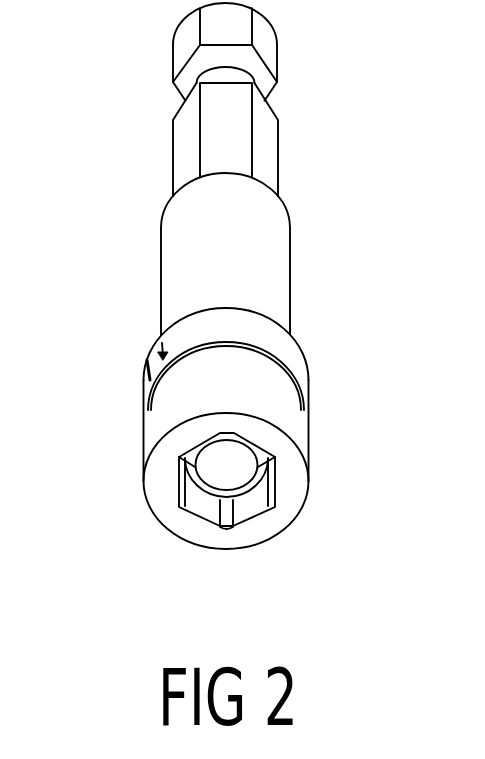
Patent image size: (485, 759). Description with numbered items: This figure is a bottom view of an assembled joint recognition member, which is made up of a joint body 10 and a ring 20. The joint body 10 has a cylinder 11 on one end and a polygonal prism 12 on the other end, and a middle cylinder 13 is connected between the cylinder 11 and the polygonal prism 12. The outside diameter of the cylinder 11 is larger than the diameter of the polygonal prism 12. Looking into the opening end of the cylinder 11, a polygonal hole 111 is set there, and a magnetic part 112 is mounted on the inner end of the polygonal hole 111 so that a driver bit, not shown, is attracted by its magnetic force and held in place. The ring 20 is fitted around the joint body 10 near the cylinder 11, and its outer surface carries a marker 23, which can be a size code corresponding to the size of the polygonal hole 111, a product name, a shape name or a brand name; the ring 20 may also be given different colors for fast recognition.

The joint body 10 is at (318, 215).
The cylinder 11 is at (272, 407).
The polygonal prism 12 is at (210, 145).
The middle cylinder 13 is at (183, 263).
The ring 20 is at (250, 330).
The marker 23 is at (148, 368).
The polygonal hole 111 is at (203, 503).
The magnetic part 112 is at (228, 466).